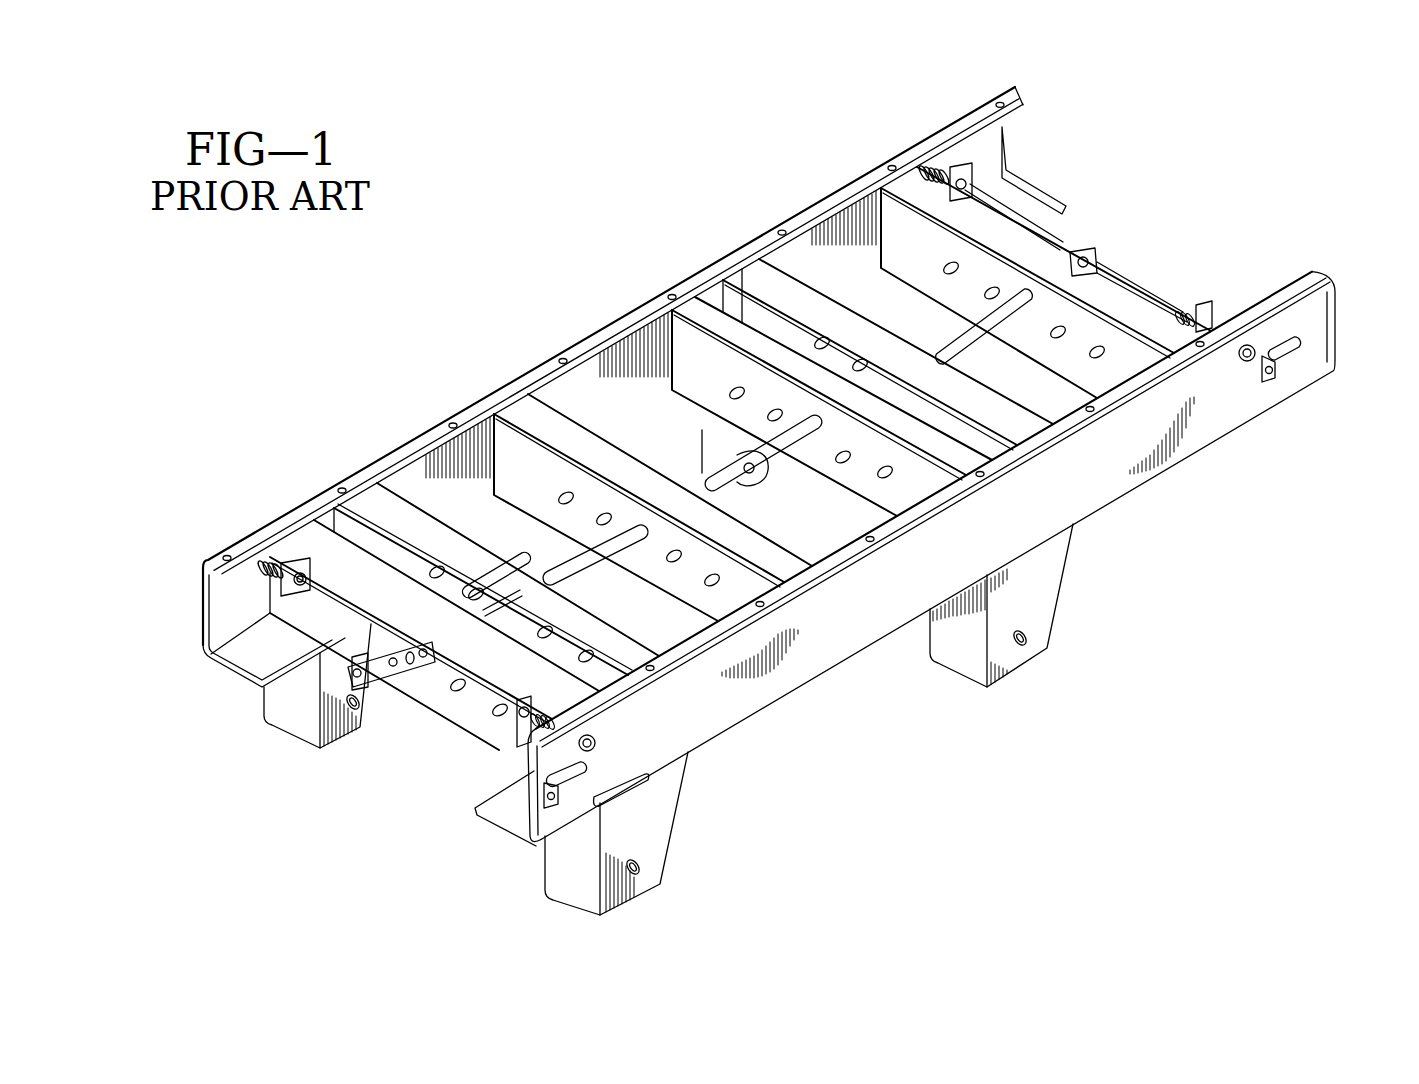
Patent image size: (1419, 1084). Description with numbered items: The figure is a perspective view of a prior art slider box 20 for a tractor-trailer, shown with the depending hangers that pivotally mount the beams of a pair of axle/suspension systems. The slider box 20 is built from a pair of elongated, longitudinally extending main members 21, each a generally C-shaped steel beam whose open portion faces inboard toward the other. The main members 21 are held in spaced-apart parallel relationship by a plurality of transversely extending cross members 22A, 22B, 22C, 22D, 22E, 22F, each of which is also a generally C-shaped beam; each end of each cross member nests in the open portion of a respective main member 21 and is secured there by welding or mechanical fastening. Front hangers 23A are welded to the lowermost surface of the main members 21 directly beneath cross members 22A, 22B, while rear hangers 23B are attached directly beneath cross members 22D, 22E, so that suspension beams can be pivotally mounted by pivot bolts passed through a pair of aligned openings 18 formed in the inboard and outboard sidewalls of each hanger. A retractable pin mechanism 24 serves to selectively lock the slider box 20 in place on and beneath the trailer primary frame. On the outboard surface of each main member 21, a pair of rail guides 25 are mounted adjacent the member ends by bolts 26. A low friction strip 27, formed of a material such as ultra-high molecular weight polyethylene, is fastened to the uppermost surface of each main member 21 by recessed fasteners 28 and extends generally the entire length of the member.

The hanger openings 18 is at (753, 466).
The slider box 20 is at (1221, 193).
The main member 21 is at (190, 593).
The cross member 22A is at (373, 540).
The cross member 22B is at (414, 493).
The cross member 22C is at (577, 411).
The cross member 22D is at (751, 308).
The cross member 22E is at (800, 271).
The cross member 22F is at (954, 166).
The front hanger 23A is at (284, 733).
The rear hanger 23B is at (754, 506).
The retractable pin mechanism 24 is at (368, 709).
The rail guide 25 is at (1292, 340).
The bolts 26 is at (1278, 372).
The low friction strip 27 is at (705, 268).
The recessed fasteners 28 is at (1005, 95).